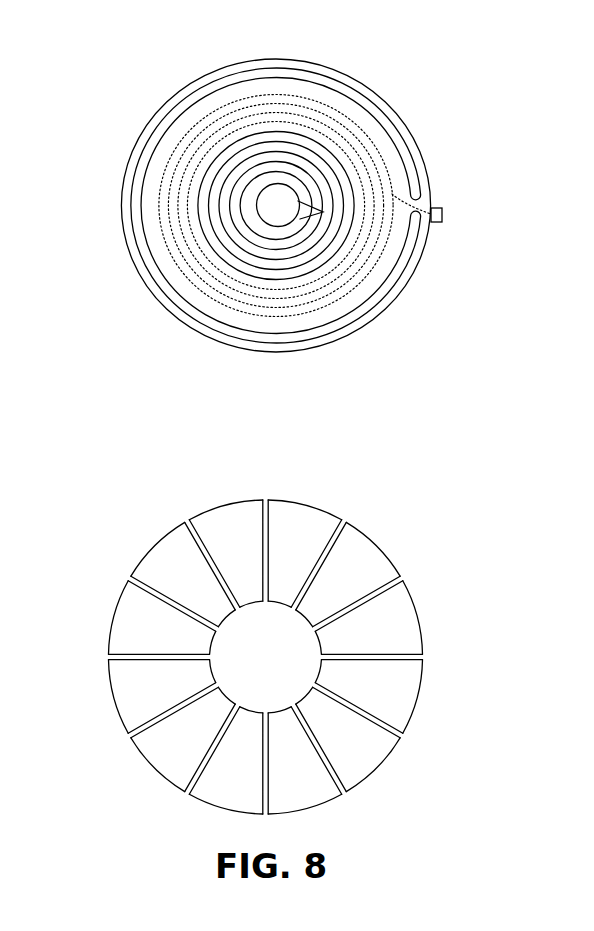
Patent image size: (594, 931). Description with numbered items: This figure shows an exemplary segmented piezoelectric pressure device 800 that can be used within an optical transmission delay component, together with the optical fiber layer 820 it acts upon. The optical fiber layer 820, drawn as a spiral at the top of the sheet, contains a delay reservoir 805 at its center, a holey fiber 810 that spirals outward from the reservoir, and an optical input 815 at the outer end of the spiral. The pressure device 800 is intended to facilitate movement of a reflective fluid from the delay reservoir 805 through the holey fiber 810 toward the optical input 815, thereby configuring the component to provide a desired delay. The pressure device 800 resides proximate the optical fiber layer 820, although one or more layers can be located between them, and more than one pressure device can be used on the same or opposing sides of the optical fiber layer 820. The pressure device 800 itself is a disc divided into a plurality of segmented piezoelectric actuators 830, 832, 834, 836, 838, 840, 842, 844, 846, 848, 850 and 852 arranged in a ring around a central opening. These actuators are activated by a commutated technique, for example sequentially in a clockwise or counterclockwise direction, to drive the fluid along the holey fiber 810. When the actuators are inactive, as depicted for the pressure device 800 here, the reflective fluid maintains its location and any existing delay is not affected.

The pressure device 800 is at (285, 642).
The delay reservoir 805 is at (278, 205).
The holey fiber 810 is at (190, 272).
The optical input 815 is at (443, 211).
The optical fiber layer 820 is at (315, 202).
The segmented piezoelectric actuator 830 is at (287, 522).
The segmented piezoelectric actuator 832 is at (368, 552).
The segmented piezoelectric actuator 834 is at (395, 628).
The segmented piezoelectric actuator 836 is at (407, 697).
The segmented piezoelectric actuator 838 is at (365, 762).
The segmented piezoelectric actuator 840 is at (310, 793).
The segmented piezoelectric actuator 842 is at (222, 793).
The segmented piezoelectric actuator 844 is at (157, 762).
The segmented piezoelectric actuator 846 is at (118, 695).
The segmented piezoelectric actuator 848 is at (118, 618).
The segmented piezoelectric actuator 850 is at (162, 543).
The segmented piezoelectric actuator 852 is at (227, 512).